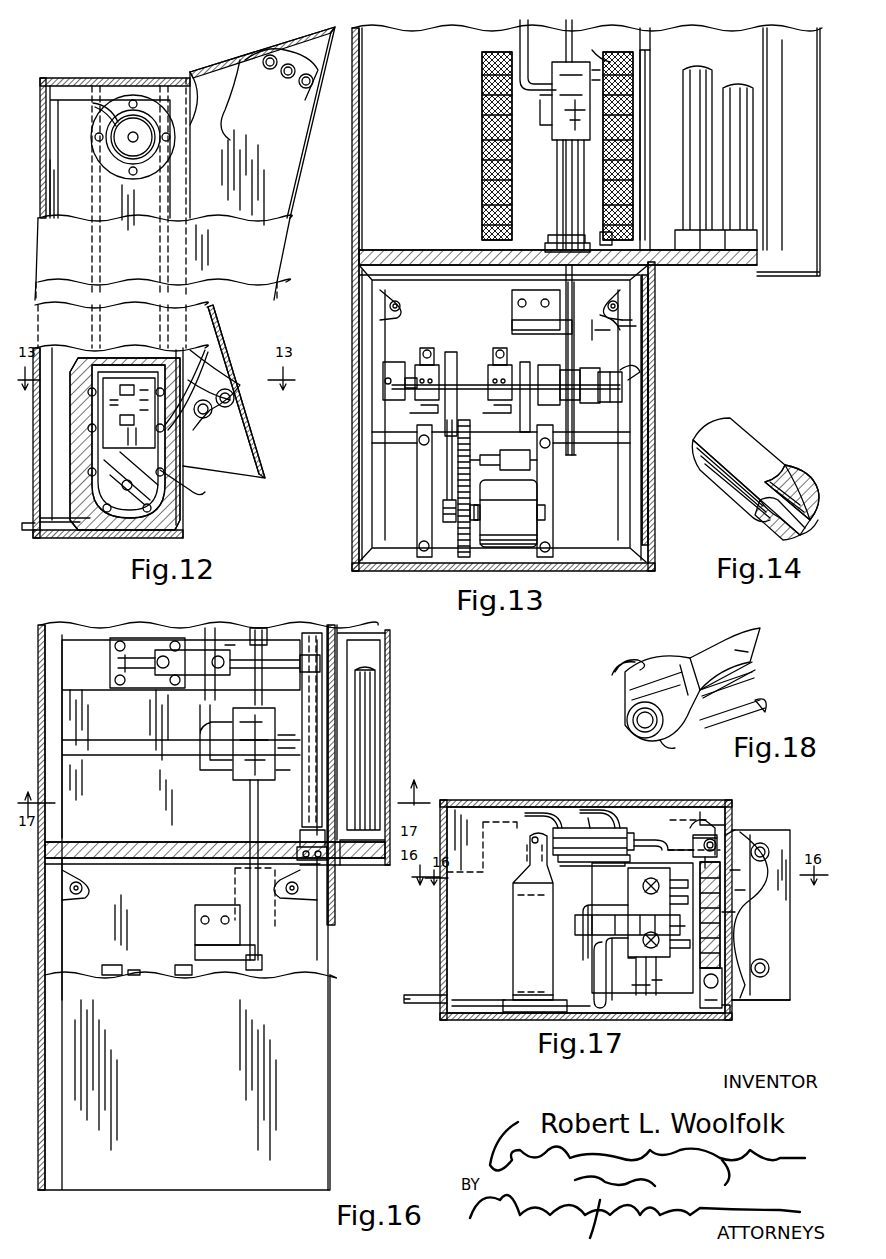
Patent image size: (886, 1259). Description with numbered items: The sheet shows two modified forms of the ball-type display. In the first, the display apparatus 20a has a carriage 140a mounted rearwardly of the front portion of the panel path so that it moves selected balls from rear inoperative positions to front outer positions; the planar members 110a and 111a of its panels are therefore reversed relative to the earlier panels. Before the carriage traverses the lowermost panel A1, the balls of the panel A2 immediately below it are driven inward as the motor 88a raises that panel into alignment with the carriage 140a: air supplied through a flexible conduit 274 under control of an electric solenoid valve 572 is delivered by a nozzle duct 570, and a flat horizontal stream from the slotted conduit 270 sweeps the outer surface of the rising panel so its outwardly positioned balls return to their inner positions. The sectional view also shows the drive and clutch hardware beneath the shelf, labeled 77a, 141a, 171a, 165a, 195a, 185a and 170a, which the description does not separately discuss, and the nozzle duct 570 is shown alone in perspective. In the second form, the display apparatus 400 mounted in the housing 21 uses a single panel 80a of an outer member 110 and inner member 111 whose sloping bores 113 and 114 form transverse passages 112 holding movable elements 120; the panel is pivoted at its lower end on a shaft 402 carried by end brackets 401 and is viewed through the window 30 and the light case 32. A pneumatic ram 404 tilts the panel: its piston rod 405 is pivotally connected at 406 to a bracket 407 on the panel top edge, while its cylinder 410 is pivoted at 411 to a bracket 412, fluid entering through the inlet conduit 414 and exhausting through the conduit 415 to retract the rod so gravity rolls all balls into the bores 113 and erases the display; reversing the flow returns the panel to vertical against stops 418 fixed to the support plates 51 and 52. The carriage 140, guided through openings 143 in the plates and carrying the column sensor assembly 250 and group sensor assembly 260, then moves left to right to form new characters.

In FIG. 12, the display apparatus 20a is at (178, 70).
In FIG. 12, the motor 88a is at (120, 140).
In FIG. 12, the carriage 140a is at (105, 390).
In FIG. 13, the carriage 140a is at (558, 140).
In FIG. 12, the lowermost panel A1 is at (186, 375).
In FIG. 12, the panel A2 is at (189, 486).
In FIG. 13, the planar member 111a is at (602, 47).
In FIG. 13, the planar member 110a is at (638, 55).
In FIG. 13, the conduit 270 is at (645, 66).
In FIG. 13, the heat exchanger stack 77a is at (556, 205).
In FIG. 13, the shelf 141a is at (575, 262).
In FIG. 13, the nozzle duct 570 is at (655, 300).
In FIG. 14, the nozzle duct 570 is at (752, 425).
In FIG. 13, the electric solenoid valve 572 is at (648, 330).
In FIG. 13, the bearing 171a is at (418, 355).
In FIG. 13, the shaft 165a is at (470, 375).
In FIG. 13, the flexible conduit 274 is at (566, 355).
In FIG. 13, the coupling 195a is at (595, 398).
In FIG. 13, the gear 185a is at (497, 440).
In FIG. 13, the motor 170a is at (535, 495).
In FIG. 16, the group sensor assembly 260 is at (300, 738).
In FIG. 16, the stops 418 is at (345, 832).
In FIG. 17, the stops 418 is at (738, 832).
In FIG. 16, the vertical support plate 51 is at (140, 842).
In FIG. 16, the carriage 140 is at (242, 775).
In FIG. 17, the carriage 140 is at (628, 890).
In FIG. 16, the sensor assembly 250 is at (285, 765).
In FIG. 16, the openings 143 is at (210, 868).
In FIG. 16, the display apparatus 400 is at (340, 1100).
In FIG. 17, the display apparatus 400 is at (436, 960).
In FIG. 17, the conduit 415 is at (525, 813).
In FIG. 17, the pneumatic ram 404 is at (572, 824).
In FIG. 17, the inlet conduit 414 is at (608, 810).
In FIG. 17, the piston rod 405 is at (668, 820).
In FIG. 17, the vertical support plate 52 is at (714, 810).
In FIG. 17, the pivotal connection 406 is at (740, 815).
In FIG. 17, the bracket 407 is at (718, 840).
In FIG. 17, the light case 32 is at (792, 835).
In FIG. 17, the pivotal connection 411 is at (530, 840).
In FIG. 17, the cylinder 410 is at (580, 862).
In FIG. 17, the outer panel member 110 is at (692, 853).
In FIG. 18, the outer panel member 110 is at (670, 742).
In FIG. 17, the inner panel member 111 is at (730, 872).
In FIG. 18, the inner panel member 111 is at (770, 703).
In FIG. 17, the movable elements 120 is at (735, 892).
In FIG. 18, the movable elements 120 is at (635, 735).
In FIG. 17, the transverse passages 112 is at (735, 915).
In FIG. 18, the transverse passages 112 is at (760, 675).
In FIG. 17, the panel 80a is at (722, 950).
In FIG. 18, the panel 80a is at (758, 655).
In FIG. 17, the window 30 is at (742, 975).
In FIG. 17, the shaft 402 is at (722, 995).
In FIG. 17, the end brackets 401 is at (712, 1012).
In FIG. 17, the bracket 412 is at (522, 950).
In FIG. 17, the housing 21 is at (455, 1010).
In FIG. 18, the bores 114 is at (740, 645).
In FIG. 18, the bores 113 is at (632, 688).